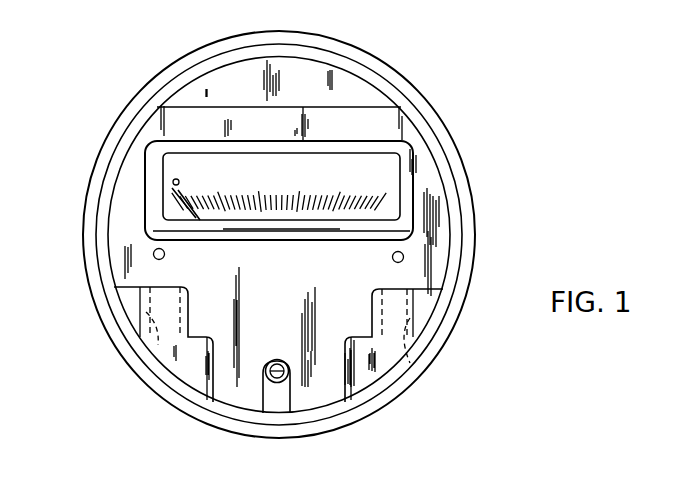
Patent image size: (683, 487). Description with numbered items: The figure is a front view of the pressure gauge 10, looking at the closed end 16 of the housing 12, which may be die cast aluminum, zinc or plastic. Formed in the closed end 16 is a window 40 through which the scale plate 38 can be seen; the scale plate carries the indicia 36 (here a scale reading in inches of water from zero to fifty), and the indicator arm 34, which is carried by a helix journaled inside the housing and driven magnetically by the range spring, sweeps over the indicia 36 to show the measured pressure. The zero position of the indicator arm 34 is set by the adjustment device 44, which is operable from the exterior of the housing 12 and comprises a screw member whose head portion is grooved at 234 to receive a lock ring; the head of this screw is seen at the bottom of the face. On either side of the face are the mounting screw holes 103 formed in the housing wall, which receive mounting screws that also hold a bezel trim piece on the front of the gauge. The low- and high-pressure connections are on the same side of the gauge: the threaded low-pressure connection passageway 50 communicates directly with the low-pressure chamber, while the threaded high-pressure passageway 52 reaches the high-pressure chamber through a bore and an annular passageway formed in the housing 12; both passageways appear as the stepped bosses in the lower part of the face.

The pressure gauge 10 is at (458, 106).
The housing 12 is at (474, 182).
The closed end 16 is at (437, 250).
The indicator arm 34 is at (186, 178).
The indicia 36 is at (176, 207).
The scale plate 38 is at (177, 176).
The window 40 is at (374, 142).
The adjustment device 44 is at (261, 389).
The low-pressure connection passageway 50 is at (158, 343).
The high-pressure passageway 52 is at (405, 350).
The mounting screw holes 103 is at (153, 256).
The groove 234 is at (290, 373).